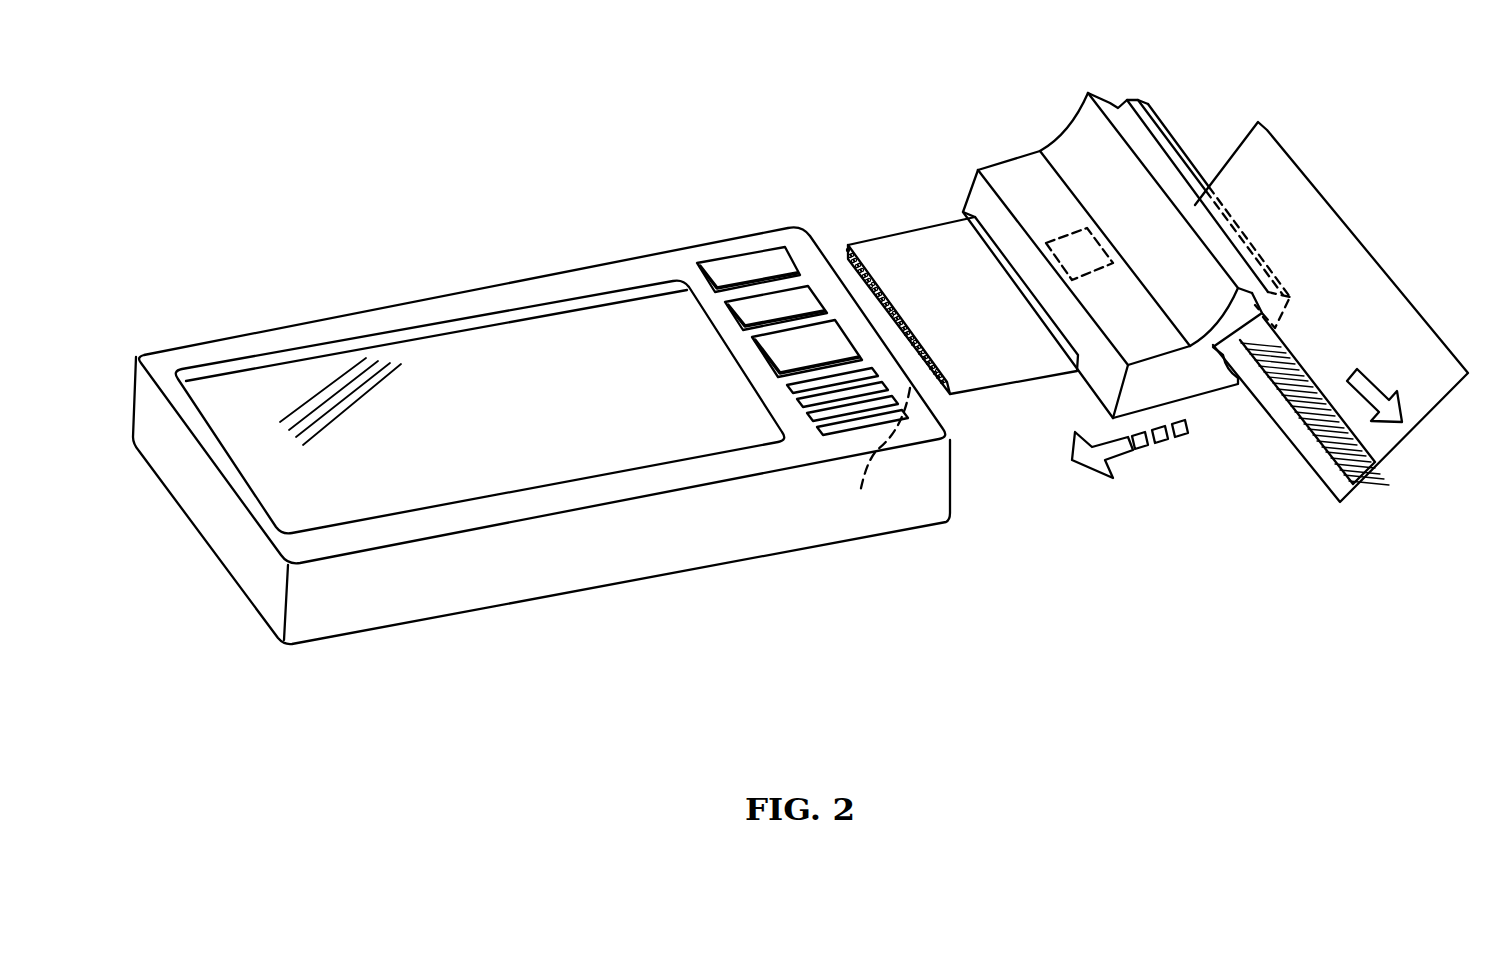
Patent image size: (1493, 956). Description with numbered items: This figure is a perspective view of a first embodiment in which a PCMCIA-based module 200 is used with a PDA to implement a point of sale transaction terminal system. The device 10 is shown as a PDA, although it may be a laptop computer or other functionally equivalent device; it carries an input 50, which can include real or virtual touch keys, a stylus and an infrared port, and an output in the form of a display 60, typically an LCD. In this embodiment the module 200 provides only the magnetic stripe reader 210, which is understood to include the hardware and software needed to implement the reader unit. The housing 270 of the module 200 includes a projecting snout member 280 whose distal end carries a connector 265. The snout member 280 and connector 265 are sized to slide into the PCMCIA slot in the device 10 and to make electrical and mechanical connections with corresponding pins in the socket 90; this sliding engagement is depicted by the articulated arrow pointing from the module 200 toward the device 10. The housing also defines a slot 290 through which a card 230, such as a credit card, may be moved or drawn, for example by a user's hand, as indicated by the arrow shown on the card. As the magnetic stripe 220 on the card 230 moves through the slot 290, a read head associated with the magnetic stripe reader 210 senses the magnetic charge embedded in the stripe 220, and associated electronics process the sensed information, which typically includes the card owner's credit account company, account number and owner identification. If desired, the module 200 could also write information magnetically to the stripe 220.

The device 10 is at (232, 244).
The input 50 is at (632, 208).
The display 60 is at (252, 378).
The socket 90 is at (848, 441).
The module 200 is at (1036, 54).
The magnetic stripe reader 210 is at (1059, 240).
The magnetic stripe 220 is at (1362, 466).
The card 230 is at (1440, 290).
The connector 265 is at (942, 395).
The housing 270 is at (994, 140).
The snout member 280 is at (898, 234).
The slot 290 is at (1111, 96).